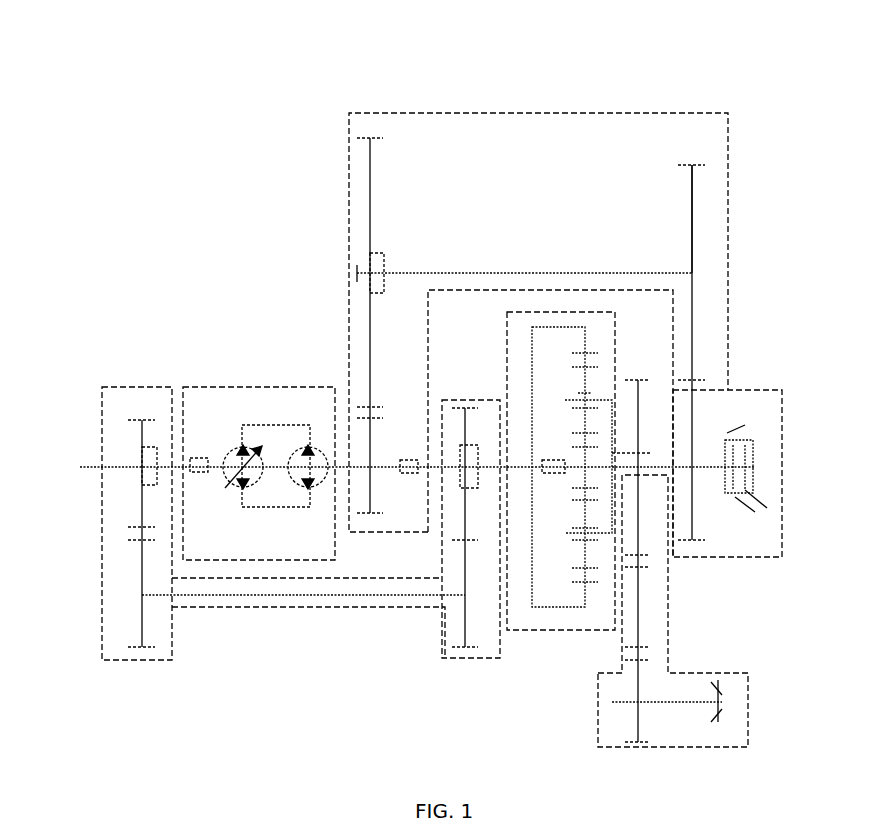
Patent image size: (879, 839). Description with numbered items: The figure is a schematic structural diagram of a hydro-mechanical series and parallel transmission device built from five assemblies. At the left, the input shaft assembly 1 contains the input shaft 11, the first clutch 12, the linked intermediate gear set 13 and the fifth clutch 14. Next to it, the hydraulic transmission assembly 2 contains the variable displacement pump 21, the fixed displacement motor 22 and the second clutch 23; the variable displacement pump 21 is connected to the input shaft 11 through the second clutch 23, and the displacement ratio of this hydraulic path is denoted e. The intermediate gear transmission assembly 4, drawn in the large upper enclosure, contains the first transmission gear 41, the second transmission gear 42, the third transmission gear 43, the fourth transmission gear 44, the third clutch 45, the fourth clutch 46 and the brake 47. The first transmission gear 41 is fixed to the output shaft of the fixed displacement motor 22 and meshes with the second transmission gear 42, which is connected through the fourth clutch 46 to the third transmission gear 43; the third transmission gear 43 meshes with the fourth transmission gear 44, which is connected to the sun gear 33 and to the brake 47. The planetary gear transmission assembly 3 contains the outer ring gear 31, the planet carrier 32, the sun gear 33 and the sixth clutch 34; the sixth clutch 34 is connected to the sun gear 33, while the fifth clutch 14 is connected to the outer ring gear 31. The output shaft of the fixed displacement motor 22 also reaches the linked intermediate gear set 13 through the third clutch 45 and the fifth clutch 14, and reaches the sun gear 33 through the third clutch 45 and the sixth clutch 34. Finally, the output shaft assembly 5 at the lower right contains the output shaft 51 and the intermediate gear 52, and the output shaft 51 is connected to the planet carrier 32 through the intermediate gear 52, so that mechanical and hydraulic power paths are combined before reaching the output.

The input shaft assembly 1 is at (118, 613).
The hydraulic transmission assembly 2 is at (200, 543).
The planetary gear transmission assembly 3 is at (532, 625).
The intermediate gear transmission assembly 4 is at (503, 163).
The output shaft assembly 5 is at (733, 705).
The input shaft 11 is at (145, 467).
The first clutch C1 12 is at (143, 473).
The linked intermediate gear set 13 is at (260, 593).
The fifth clutch C5 14 is at (468, 472).
The variable displacement pump 21 is at (243, 448).
The fixed displacement motor 22 is at (310, 451).
The second clutch C2 23 is at (197, 462).
The outer ring gear 31 is at (693, 273).
The planet carrier 32 is at (590, 398).
The sun gear 33 is at (587, 467).
The sixth clutch C6 34 is at (557, 470).
The first transmission gear 41 is at (408, 460).
The second transmission gear 42 is at (370, 312).
The third transmission gear 43 is at (585, 327).
The fourth transmission gear 44 is at (693, 468).
The third clutch C3 45 is at (370, 467).
The fourth clutch C4 46 is at (372, 262).
The brake B1 47 is at (730, 468).
The output shaft 51 is at (667, 702).
The intermediate gear 52 is at (640, 608).